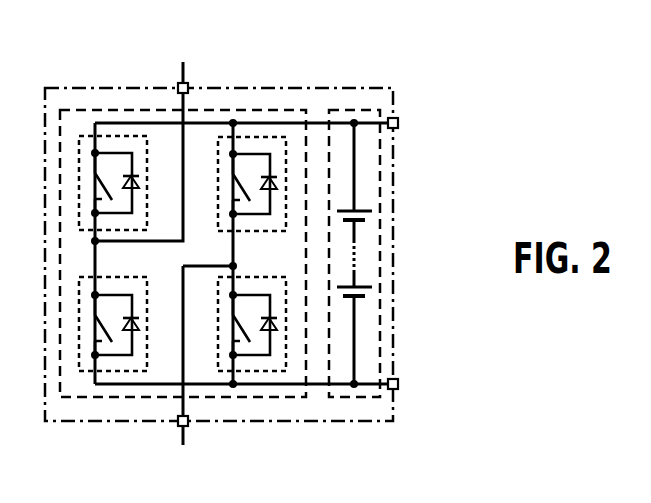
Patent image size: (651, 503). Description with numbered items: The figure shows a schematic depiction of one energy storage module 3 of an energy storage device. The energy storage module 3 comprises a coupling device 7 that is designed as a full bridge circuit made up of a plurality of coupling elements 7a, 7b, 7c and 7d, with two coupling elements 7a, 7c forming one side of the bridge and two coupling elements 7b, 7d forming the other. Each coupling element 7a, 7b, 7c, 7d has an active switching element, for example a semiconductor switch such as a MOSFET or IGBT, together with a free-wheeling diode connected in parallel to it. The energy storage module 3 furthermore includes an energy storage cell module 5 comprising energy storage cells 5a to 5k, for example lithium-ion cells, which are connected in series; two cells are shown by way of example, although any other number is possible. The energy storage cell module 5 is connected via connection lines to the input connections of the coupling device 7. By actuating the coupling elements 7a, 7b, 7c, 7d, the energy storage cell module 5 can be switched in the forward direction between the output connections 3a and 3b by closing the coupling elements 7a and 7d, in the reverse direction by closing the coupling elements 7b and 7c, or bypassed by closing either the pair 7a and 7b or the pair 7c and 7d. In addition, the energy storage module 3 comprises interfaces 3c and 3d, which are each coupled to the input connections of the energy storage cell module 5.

The energy storage module 3 is at (47, 88).
The output connection 3a is at (189, 86).
The output connection 3b is at (177, 422).
The interface 3c is at (399, 122).
The interface 3d is at (399, 383).
The energy storage cell module 5 is at (356, 110).
The energy storage cell 5a is at (367, 217).
The energy storage cell 5k is at (367, 293).
The coupling device 7 is at (102, 110).
The coupling element 7a is at (140, 136).
The coupling element 7b is at (265, 137).
The coupling element 7c is at (80, 372).
The coupling element 7d is at (265, 372).